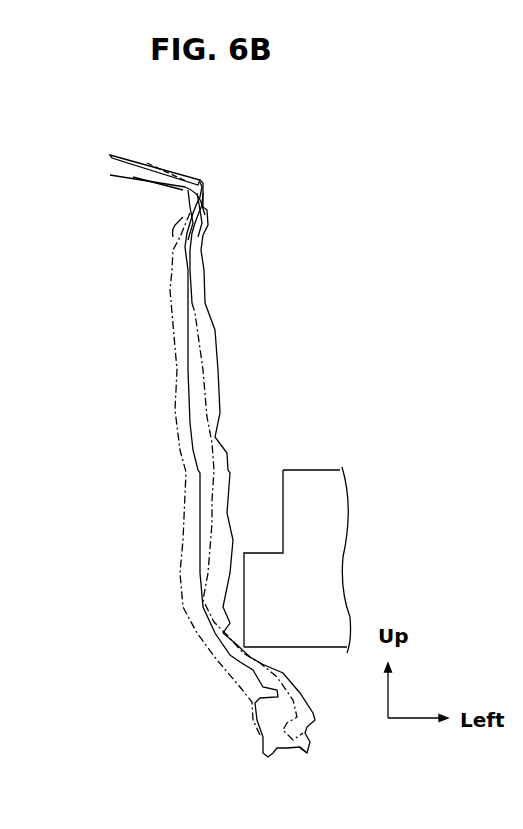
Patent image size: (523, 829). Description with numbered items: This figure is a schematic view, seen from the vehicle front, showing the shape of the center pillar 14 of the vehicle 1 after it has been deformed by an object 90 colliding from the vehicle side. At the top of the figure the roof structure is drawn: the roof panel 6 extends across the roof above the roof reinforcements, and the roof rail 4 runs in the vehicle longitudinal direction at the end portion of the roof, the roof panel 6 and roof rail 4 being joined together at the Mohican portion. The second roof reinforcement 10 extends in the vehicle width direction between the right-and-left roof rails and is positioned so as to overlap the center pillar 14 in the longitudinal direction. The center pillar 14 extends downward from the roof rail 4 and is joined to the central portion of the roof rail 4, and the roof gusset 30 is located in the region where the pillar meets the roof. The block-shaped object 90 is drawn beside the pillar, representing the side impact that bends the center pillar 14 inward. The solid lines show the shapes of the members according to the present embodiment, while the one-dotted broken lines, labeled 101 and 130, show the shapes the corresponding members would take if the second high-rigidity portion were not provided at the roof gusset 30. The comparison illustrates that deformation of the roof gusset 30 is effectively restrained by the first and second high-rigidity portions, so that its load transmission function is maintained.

The vehicle 1 is at (226, 331).
The roof rail 4 is at (207, 220).
The roof panel 6 is at (179, 170).
The second roof reinforcement 10 is at (150, 175).
The center pillar 14 is at (207, 375).
The roof gusset 30 is at (202, 227).
The object 90 is at (325, 468).
The outer panel 101 is at (166, 370).
The connecting portion 130 is at (183, 217).